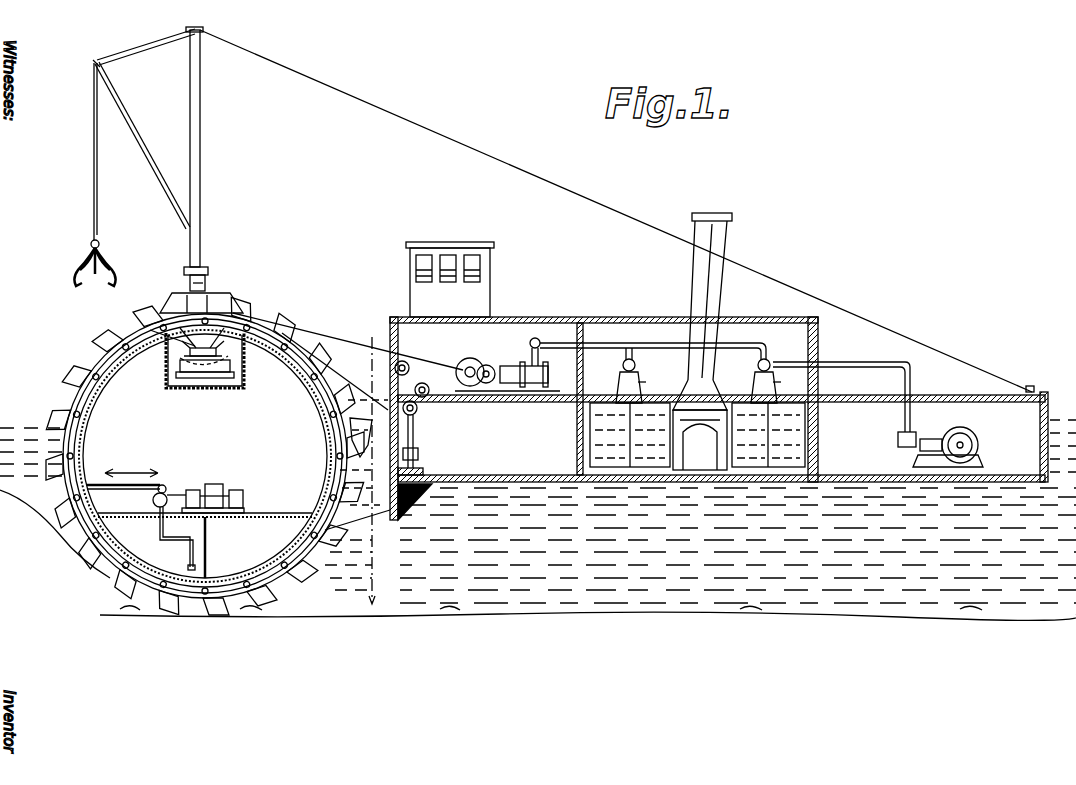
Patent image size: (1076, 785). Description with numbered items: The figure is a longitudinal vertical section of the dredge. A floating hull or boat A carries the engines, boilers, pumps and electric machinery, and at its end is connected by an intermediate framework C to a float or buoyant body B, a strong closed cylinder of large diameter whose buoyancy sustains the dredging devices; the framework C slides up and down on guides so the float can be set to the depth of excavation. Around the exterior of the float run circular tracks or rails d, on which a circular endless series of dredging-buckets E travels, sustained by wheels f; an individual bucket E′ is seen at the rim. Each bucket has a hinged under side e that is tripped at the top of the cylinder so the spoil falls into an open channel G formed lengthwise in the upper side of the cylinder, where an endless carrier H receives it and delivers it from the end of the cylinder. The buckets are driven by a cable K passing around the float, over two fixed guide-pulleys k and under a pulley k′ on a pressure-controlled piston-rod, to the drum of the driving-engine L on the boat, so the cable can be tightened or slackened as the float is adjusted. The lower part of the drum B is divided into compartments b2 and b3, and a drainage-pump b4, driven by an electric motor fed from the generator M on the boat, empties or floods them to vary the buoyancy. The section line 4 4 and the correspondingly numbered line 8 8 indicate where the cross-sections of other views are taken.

The floating hull or boat A is at (628, 299).
The float or buoyant body B is at (328, 442).
The intermediate framework C is at (336, 447).
The dredging-buckets E is at (78, 331).
The bucket E′ is at (312, 575).
The open passage or channel G is at (245, 380).
The endless carrier H is at (197, 387).
The driving chain or cable K is at (349, 340).
The driving-engine L is at (476, 367).
The generator M is at (985, 447).
The fixed guide-pulleys k is at (407, 363).
The pulley on piston-rod k′ is at (418, 413).
The compartment b2 is at (205, 545).
The compartment b3 is at (161, 527).
The drainage-pump b4 is at (221, 484).
The circular tracks or rails d is at (150, 338).
The under side of bucket e is at (233, 321).
The wheels f is at (86, 449).
The section line 4 4 is at (106, 323).
The section line 8 8 is at (371, 461).